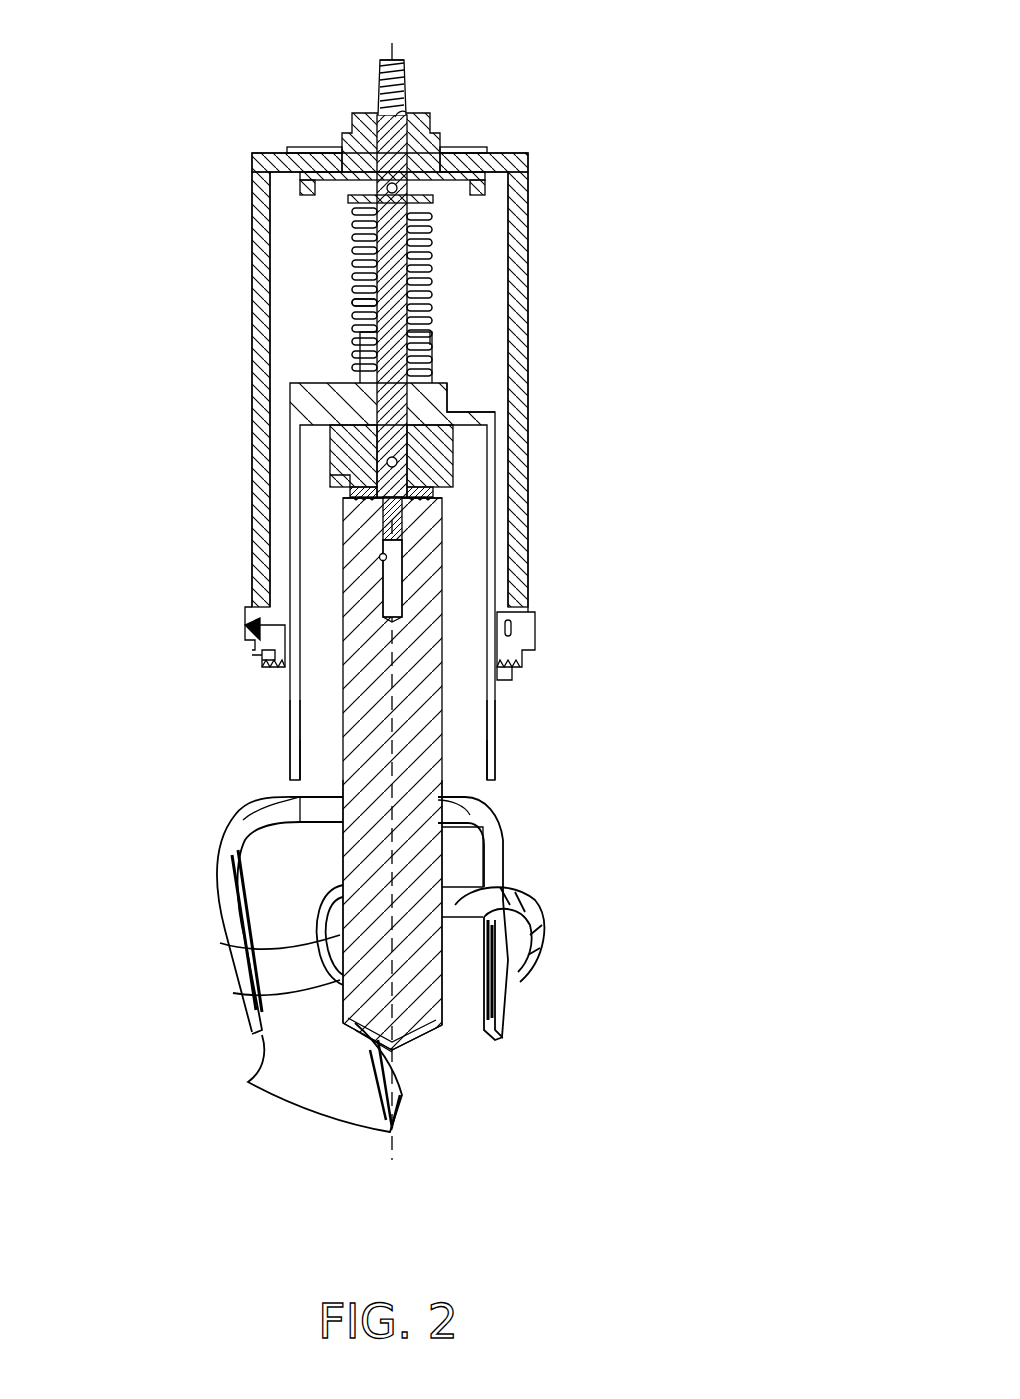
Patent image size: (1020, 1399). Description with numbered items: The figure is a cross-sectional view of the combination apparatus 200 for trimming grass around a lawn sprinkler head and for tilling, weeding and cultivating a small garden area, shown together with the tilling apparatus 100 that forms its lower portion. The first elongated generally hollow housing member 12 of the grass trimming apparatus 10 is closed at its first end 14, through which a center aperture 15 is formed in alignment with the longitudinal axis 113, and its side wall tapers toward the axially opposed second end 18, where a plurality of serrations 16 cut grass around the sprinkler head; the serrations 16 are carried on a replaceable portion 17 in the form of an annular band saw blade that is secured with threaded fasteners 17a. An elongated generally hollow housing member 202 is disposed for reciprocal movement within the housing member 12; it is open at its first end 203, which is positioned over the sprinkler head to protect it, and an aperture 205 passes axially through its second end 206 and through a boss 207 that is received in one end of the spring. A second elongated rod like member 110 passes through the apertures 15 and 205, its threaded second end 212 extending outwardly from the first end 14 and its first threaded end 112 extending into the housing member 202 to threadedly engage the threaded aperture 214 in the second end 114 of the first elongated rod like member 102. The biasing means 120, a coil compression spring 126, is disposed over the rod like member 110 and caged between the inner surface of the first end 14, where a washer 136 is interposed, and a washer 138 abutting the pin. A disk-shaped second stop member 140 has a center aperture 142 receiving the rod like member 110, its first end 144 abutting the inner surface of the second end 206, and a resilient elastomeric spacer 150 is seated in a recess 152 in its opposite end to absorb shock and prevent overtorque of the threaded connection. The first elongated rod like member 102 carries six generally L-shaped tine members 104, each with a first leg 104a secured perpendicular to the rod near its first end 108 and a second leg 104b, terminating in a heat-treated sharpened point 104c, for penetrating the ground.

The grass trimming apparatus 10 is at (605, 392).
The first elongated generally hollow housing member 12 is at (520, 208).
The first end 14 is at (478, 147).
The center aperture 15 is at (398, 115).
The serrations 16 is at (505, 680).
The replaceable portion 17 is at (528, 160).
The threaded fasteners 17a is at (245, 633).
The second end 18 is at (535, 627).
The apparatus for tilling, weeding and cultivating 100 is at (572, 920).
The first elongated rod like member 102 is at (412, 808).
The generally L-shaped tine members 104 is at (243, 943).
The first leg 104a is at (275, 800).
The second leg 104b is at (250, 995).
The sharpened point 104c is at (250, 1082).
The first end 108 is at (430, 1035).
The second elongated rod like member 110 is at (400, 267).
The first threaded end 112 is at (440, 505).
The longitudinal axis 113 is at (387, 55).
The second end 114 is at (440, 543).
The biasing means 120 is at (345, 270).
The spring 126 is at (353, 303).
The washer 136 is at (303, 190).
The washer 138 is at (440, 200).
The second stop member 140 is at (440, 490).
The center aperture 142 is at (452, 440).
The first end 144 is at (440, 395).
The spacer 150 is at (355, 502).
The recess 152 is at (355, 494).
The apparatus for trimming grass and tilling 200 is at (768, 513).
The elongated generally hollow housing member 202 is at (497, 712).
The first end 203 is at (497, 755).
The aperture 205 is at (390, 372).
The second end 206 is at (302, 418).
The boss 207 is at (435, 355).
The second end 212 is at (375, 97).
The threaded aperture 214 is at (380, 557).